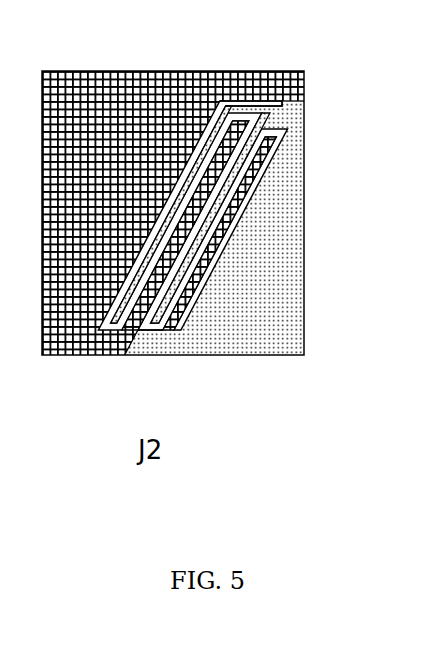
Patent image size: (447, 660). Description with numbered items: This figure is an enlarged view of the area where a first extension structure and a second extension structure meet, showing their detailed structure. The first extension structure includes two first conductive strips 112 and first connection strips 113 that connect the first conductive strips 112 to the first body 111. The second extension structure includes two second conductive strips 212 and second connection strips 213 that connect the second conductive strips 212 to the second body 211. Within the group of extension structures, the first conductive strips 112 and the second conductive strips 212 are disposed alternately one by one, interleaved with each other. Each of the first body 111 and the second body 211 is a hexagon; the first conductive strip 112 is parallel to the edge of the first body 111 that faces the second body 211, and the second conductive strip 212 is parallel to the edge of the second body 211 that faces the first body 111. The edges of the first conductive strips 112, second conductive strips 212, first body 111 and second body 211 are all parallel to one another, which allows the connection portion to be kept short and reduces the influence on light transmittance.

The first body 111 is at (92, 117).
The first conductive stripe 112 is at (217, 197).
The first connection strip 113 is at (247, 118).
The second body 211 is at (305, 300).
The second conductive stripe 212 is at (137, 280).
The second connection strip 213 is at (268, 107).